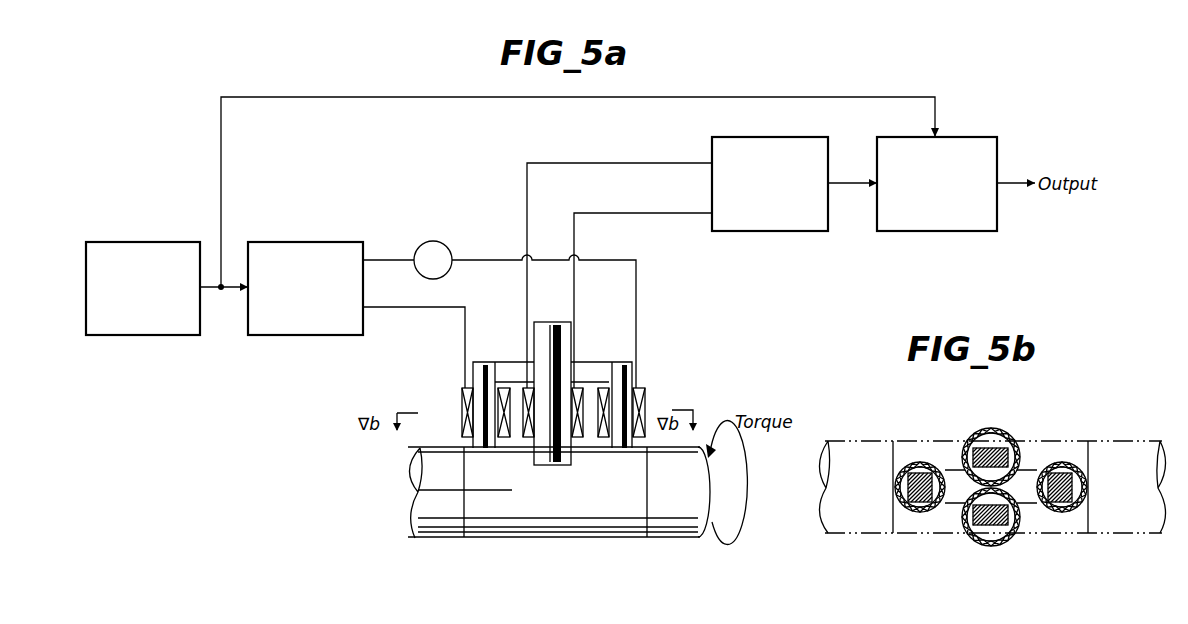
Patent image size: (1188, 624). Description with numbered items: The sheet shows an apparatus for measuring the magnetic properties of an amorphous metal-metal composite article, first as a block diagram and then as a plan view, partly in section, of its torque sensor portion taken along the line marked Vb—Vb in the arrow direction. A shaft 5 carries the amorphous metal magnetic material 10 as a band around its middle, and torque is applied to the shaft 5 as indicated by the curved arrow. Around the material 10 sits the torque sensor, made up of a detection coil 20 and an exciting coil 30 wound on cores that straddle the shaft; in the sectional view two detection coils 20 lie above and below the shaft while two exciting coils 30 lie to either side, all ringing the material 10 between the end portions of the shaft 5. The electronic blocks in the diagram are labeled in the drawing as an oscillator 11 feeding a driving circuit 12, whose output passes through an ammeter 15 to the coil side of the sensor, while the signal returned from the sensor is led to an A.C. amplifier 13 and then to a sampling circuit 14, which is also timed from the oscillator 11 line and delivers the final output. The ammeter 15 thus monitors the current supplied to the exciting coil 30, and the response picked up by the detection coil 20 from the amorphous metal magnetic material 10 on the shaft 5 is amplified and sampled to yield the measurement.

In FIG. 5a, the shaft 5 is at (442, 537).
In FIG. 5b, the shaft 5 is at (868, 520).
In FIG. 5a, the amorphous metal magnetic material 10 is at (555, 541).
In FIG. 5b, the amorphous metal magnetic material 10 is at (1034, 540).
In FIG. 5a, the oscillator 11 is at (157, 242).
In FIG. 5a, the driving circuit 12 is at (327, 242).
In FIG. 5a, the A.C. amplifier 13 is at (712, 141).
In FIG. 5a, the sampling circuit 14 is at (975, 137).
In FIG. 5a, the ammeter 15 is at (441, 243).
In FIG. 5a, the detection coil 20 is at (545, 322).
In FIG. 5b, the detection coil 20 is at (1000, 432).
In FIG. 5a, the exciting coil 30 is at (643, 398).
In FIG. 5b, the exciting coil 30 is at (1064, 462).